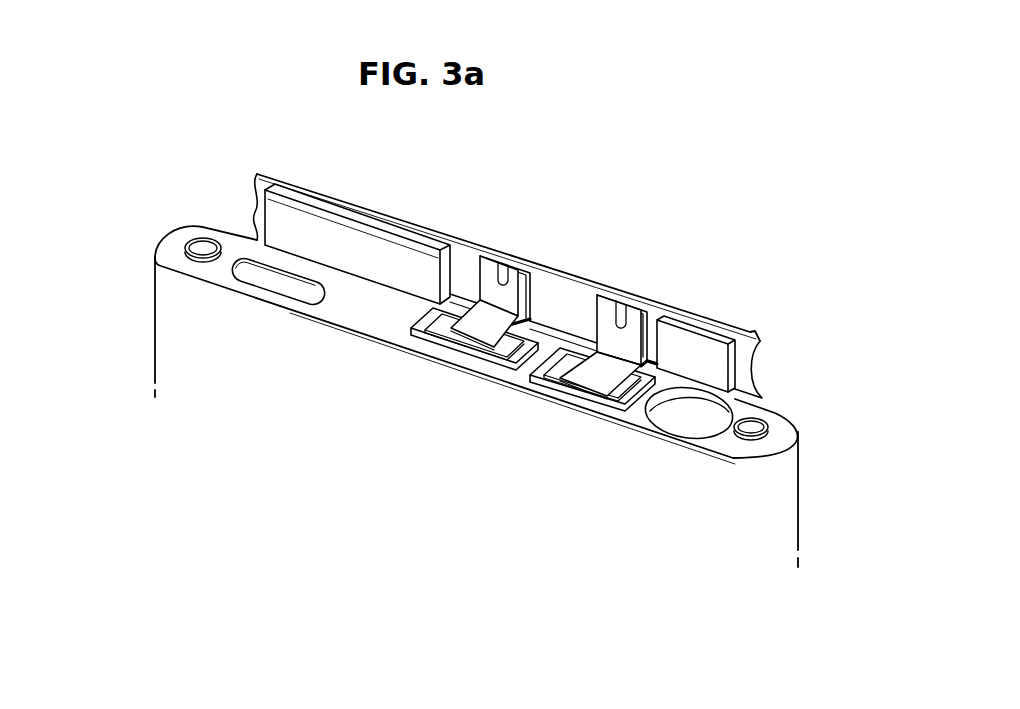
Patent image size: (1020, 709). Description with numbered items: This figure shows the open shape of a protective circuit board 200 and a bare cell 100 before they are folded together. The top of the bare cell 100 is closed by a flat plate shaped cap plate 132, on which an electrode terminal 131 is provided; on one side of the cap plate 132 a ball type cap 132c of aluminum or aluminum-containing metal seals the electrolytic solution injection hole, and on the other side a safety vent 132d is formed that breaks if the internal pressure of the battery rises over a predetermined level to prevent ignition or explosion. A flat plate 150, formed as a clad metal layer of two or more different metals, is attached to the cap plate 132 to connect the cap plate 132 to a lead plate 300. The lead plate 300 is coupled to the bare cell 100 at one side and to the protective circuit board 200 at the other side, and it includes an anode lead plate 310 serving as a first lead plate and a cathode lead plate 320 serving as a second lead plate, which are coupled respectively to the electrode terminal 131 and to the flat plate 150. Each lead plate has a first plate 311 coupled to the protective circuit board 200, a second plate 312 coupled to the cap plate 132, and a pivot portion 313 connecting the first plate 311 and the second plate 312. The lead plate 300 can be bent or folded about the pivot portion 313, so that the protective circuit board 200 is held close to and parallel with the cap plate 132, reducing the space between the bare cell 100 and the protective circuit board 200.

The bare cell 100 is at (193, 314).
The cap plate 132 is at (173, 242).
The cap 132c is at (677, 422).
The safety vent 132d is at (280, 287).
The electrode terminal 131 is at (440, 323).
The flat plate 150 is at (620, 397).
The protective circuit board 200 is at (713, 323).
The lead plate 300 is at (632, 222).
The anode lead plate 310 is at (661, 349).
The first plate 311 is at (630, 330).
The second plate 312 is at (587, 380).
The pivot portion 313 is at (623, 352).
The cathode lead plate 320 is at (491, 316).